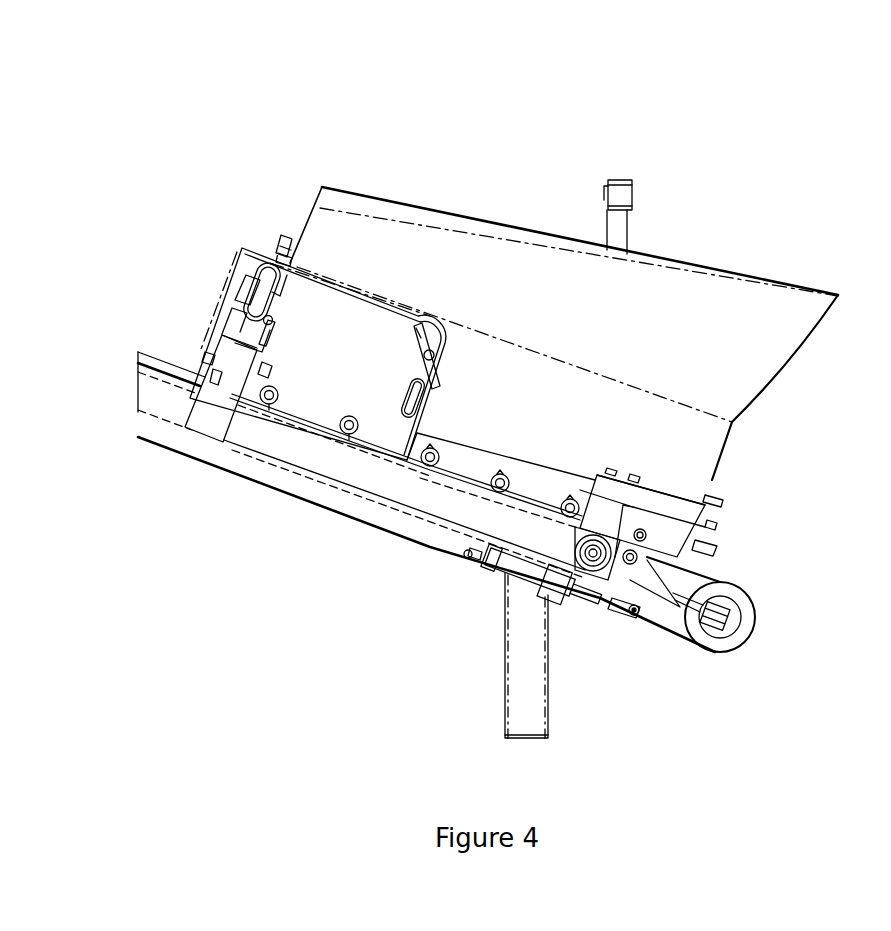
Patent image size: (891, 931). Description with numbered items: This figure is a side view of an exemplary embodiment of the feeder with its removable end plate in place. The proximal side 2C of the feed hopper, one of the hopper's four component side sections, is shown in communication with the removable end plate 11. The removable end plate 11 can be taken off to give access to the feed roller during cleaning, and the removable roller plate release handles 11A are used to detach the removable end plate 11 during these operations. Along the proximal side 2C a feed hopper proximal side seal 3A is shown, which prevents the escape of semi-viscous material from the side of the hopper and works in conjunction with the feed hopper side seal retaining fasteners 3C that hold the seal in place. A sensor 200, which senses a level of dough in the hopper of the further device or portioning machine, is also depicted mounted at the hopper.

The removable end plate 11 is at (303, 355).
The removable roller plate release handle 11A is at (429, 355).
The proximal side 2C is at (563, 292).
The sensor 200 is at (631, 190).
The feed hopper proximal side seal 3A is at (540, 488).
The feed hopper side seal retaining fastener 3C is at (497, 488).